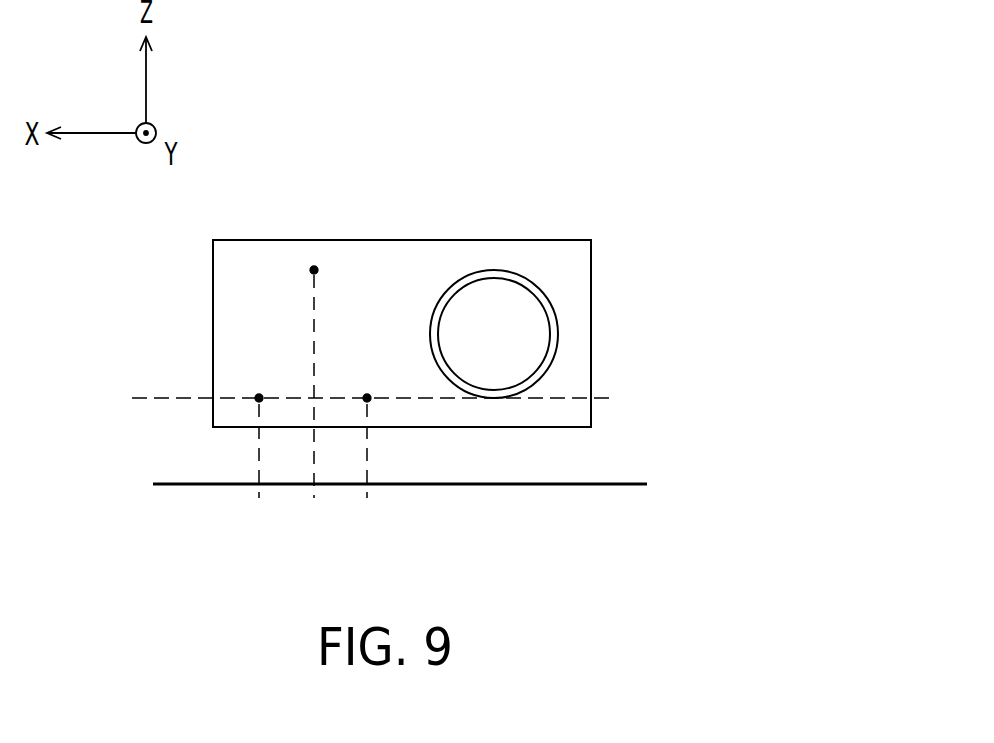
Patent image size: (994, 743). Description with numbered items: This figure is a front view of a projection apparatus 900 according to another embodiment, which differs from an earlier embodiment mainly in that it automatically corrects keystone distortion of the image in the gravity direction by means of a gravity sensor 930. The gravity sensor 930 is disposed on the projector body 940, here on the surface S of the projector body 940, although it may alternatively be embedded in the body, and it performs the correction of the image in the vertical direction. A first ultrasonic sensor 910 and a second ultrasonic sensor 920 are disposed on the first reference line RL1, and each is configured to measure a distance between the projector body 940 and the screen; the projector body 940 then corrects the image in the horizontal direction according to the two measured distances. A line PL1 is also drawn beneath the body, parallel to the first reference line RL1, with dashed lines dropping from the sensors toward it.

The projection apparatus 900 is at (489, 413).
The first ultrasonic sensor 910 is at (256, 398).
The second ultrasonic sensor 920 is at (370, 398).
The gravity sensor 930 is at (318, 269).
The projector body 940 is at (591, 307).
The surface S is at (571, 273).
The first reference line RL1 is at (394, 401).
The plane line PL1 is at (425, 486).